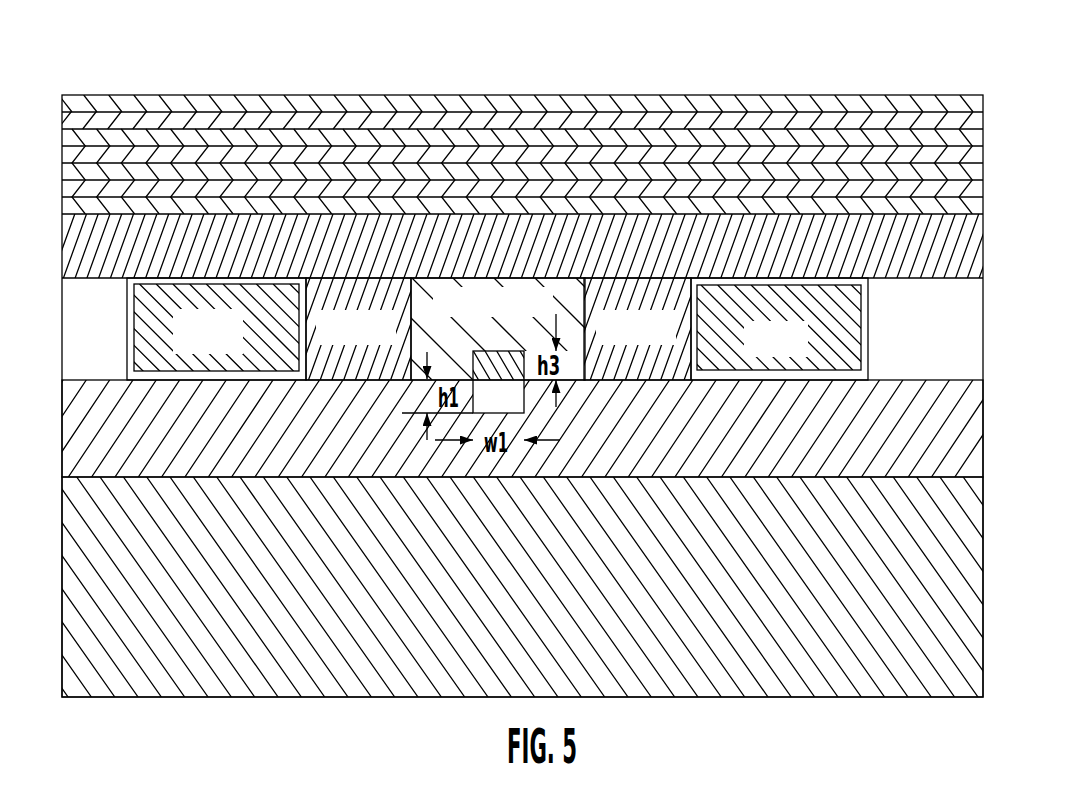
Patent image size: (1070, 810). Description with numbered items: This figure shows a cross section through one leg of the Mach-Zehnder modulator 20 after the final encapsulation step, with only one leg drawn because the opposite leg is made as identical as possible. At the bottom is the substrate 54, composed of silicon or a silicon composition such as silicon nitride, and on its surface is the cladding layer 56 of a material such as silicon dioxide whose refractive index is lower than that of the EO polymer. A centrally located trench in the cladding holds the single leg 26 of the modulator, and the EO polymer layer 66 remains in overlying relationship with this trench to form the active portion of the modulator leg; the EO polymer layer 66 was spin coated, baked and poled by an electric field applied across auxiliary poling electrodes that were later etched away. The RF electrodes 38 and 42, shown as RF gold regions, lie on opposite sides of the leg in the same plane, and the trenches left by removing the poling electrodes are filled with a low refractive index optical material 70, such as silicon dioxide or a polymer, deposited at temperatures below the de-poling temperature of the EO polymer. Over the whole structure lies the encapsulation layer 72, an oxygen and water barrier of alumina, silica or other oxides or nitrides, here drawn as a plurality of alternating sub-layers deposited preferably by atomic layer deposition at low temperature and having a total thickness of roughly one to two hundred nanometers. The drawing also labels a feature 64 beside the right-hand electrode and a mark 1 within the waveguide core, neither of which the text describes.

The Mach-Zehnder modulator 20 is at (963, 20).
The encapsulation layer 72 is at (397, 167).
The EO polymer layer 66 is at (947, 286).
The low refractive index optical material 70 is at (343, 281).
The RF electrode 42 is at (262, 291).
The RF electrode 38 is at (743, 284).
The electrode region 64 is at (870, 276).
The single leg 26 is at (504, 232).
The waveguide rib 1 is at (499, 382).
The cladding layer 56 is at (977, 430).
The substrate 54 is at (965, 562).